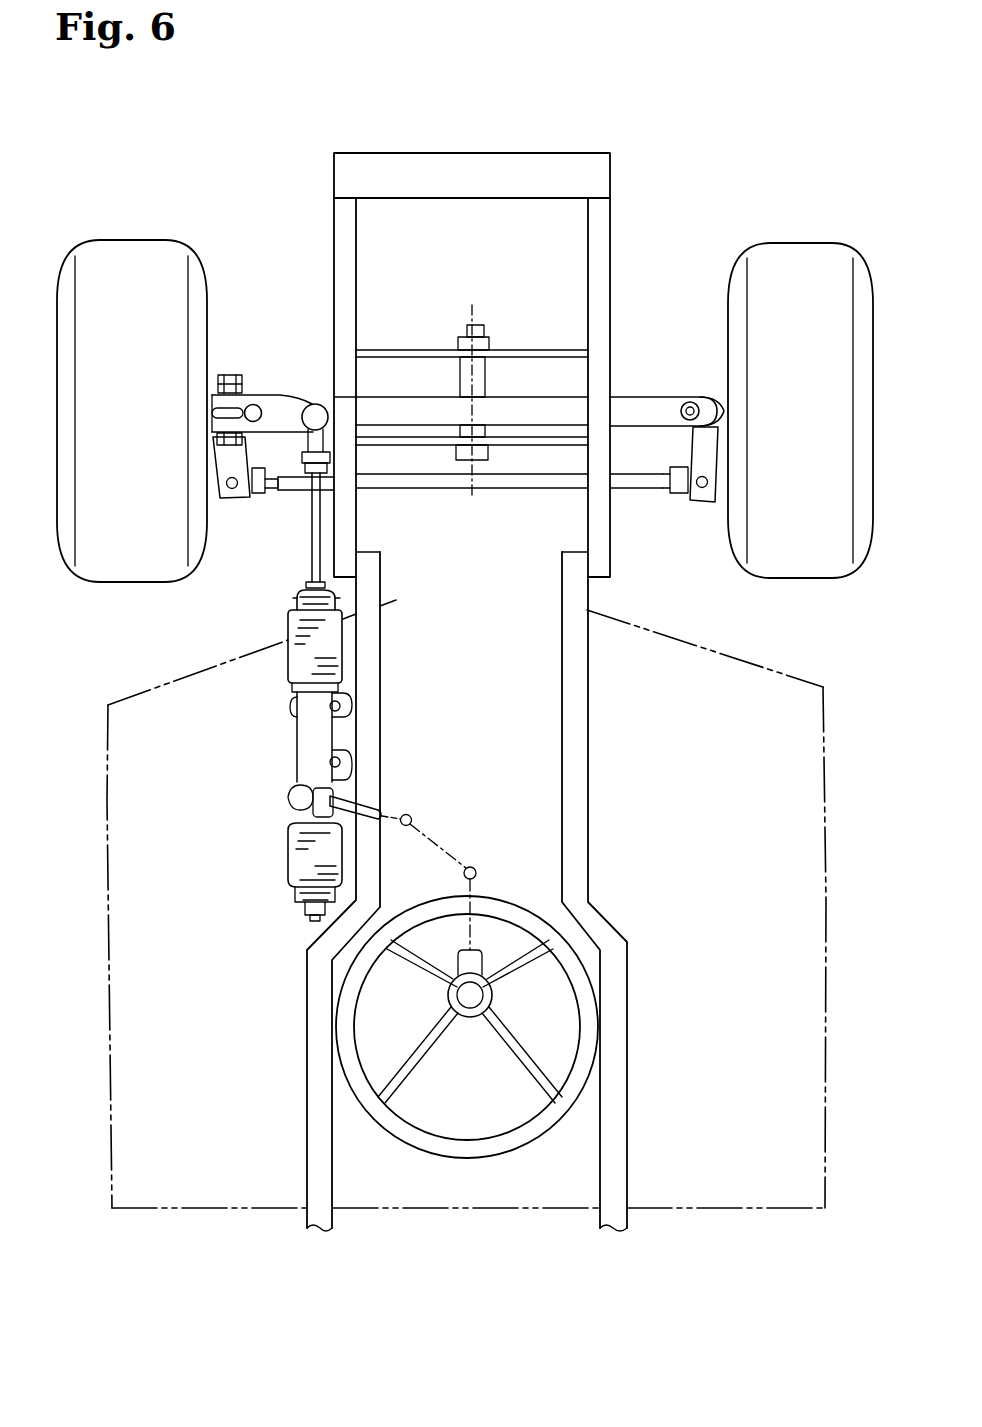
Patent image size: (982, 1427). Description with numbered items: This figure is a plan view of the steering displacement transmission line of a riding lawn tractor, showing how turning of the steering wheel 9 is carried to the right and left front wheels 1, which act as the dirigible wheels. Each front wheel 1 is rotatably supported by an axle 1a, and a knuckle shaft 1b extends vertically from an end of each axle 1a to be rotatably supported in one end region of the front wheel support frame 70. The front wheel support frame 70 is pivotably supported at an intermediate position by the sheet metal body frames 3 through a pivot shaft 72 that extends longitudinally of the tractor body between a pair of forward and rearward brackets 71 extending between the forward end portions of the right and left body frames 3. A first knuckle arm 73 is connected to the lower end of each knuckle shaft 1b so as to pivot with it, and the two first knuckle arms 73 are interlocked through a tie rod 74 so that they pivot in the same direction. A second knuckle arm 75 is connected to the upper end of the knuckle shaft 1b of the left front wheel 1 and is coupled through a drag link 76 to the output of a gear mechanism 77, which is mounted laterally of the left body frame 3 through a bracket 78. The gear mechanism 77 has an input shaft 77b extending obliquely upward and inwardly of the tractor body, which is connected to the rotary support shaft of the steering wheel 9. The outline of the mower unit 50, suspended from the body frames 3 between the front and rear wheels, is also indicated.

The front wheel 1 is at (158, 252).
The axle 1a is at (725, 403).
The knuckle shaft 1b is at (257, 405).
The body frame 3 is at (607, 271).
The steering wheel 9 is at (590, 1019).
The mower unit 50 is at (205, 668).
The front wheel support frame 70 is at (378, 407).
The bracket 71 is at (427, 350).
The pivot shaft 72 is at (484, 329).
The first knuckle arm 73 is at (237, 500).
The tie rod 74 is at (418, 480).
The second knuckle arm 75 is at (283, 400).
The drag link 76 is at (312, 524).
The gear mechanism 77 is at (293, 758).
The input shaft 77b is at (368, 807).
The bracket 78 is at (346, 732).